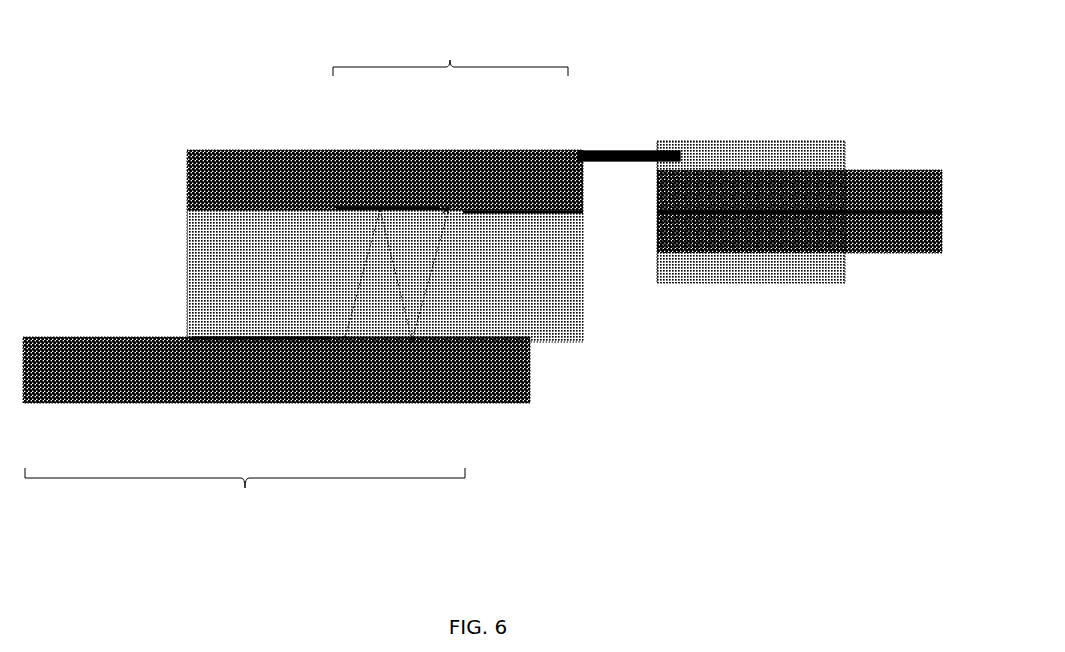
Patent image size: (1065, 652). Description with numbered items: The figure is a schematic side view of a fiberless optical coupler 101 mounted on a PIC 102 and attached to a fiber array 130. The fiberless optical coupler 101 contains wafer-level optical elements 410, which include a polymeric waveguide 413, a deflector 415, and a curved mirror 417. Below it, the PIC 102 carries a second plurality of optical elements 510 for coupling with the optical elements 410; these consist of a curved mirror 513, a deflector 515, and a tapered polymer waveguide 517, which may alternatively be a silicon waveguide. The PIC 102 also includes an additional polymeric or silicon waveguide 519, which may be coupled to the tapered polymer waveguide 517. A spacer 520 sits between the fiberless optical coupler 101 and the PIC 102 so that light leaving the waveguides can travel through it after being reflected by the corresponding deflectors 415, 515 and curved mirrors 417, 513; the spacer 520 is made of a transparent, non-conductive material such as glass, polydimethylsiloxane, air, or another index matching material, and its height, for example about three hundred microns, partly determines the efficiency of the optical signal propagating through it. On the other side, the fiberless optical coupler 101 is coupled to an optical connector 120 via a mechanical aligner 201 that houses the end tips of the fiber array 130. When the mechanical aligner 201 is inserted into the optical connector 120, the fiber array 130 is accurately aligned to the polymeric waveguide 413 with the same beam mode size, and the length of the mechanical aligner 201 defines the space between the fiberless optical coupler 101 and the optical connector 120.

The fiberless optical coupler 101 is at (233, 187).
The PIC 102 is at (500, 390).
The optical connector 120 is at (737, 283).
The fiber array 130 is at (872, 213).
The mechanical aligner 201 is at (630, 150).
The optical elements 410 is at (450, 49).
The waveguide 413 is at (520, 211).
The deflector 415 is at (448, 211).
The curved mirror 417 is at (380, 208).
The second plurality of optical elements 510 is at (245, 500).
The curved mirror 513 is at (415, 330).
The deflector 515 is at (347, 330).
The tapered polymer waveguide 517 is at (237, 338).
The waveguide 519 is at (90, 338).
The spacer 520 is at (535, 302).